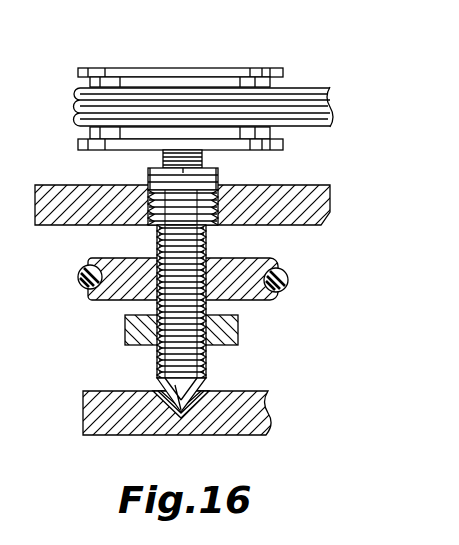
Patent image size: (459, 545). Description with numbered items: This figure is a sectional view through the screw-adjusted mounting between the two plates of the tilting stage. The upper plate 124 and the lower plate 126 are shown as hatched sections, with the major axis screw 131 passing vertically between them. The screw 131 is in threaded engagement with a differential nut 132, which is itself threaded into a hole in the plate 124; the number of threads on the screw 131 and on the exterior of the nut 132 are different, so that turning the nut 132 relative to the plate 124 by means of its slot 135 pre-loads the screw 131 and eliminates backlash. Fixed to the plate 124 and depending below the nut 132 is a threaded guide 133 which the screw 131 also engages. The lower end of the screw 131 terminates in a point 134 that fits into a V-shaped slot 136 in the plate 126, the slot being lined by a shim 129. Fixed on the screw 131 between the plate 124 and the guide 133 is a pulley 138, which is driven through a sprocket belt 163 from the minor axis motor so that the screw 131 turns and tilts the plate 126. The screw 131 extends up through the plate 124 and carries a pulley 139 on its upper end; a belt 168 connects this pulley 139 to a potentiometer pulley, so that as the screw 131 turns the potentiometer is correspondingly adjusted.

The plate 124 is at (60, 185).
The plate 126 is at (82, 402).
The shim 129 is at (191, 414).
The major axis screw 131 is at (160, 248).
The differential nut 132 is at (218, 176).
The threaded guide 133 is at (125, 325).
The point 134 is at (165, 392).
The slot 135 is at (163, 172).
The V-shaped slot 136 is at (169, 410).
The pulley 138 is at (100, 300).
The pulley 139 is at (90, 70).
The sprocket belt 163 is at (79, 275).
The belt 168 is at (304, 90).